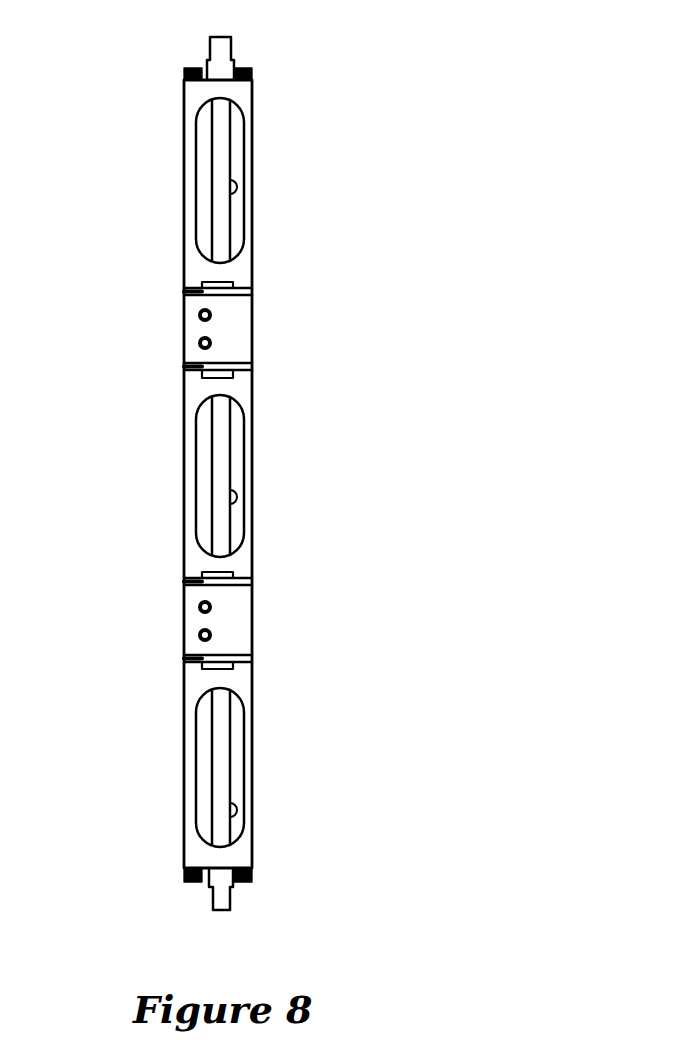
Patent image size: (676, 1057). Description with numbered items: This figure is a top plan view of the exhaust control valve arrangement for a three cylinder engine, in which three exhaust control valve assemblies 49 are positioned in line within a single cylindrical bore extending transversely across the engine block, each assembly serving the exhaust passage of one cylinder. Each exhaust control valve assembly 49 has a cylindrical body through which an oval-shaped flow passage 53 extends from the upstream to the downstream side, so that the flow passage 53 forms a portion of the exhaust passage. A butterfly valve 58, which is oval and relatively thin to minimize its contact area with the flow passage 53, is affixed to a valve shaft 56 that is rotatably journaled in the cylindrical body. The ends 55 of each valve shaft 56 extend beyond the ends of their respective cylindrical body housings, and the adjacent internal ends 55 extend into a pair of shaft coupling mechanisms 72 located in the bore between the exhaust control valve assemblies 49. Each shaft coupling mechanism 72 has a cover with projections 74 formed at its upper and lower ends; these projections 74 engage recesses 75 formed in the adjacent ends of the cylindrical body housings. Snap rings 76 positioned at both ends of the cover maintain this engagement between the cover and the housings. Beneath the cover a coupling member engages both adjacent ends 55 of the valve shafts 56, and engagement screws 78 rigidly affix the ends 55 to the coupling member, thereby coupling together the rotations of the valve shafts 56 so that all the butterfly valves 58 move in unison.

The exhaust control valve assembly 49 is at (170, 166).
The ends of valve shaft 55 is at (228, 46).
The butterfly valve 58 is at (203, 226).
The valve shaft 56 is at (242, 145).
The flow passage 53 is at (237, 188).
The shaft coupling mechanism 72 is at (246, 328).
The projections 74 is at (184, 303).
The recesses 75 is at (233, 283).
The snap rings 76 is at (232, 296).
The engagement screws 78 is at (184, 343).